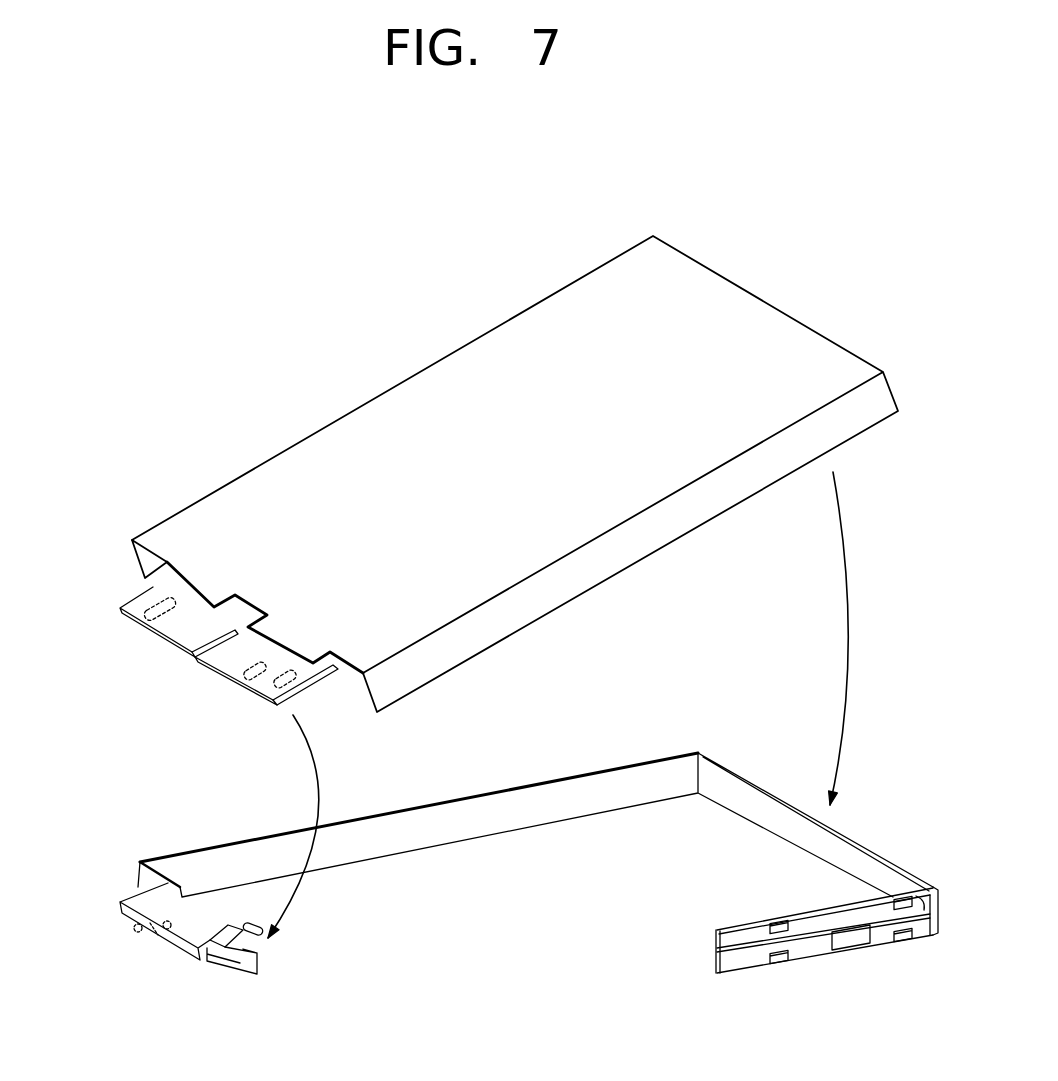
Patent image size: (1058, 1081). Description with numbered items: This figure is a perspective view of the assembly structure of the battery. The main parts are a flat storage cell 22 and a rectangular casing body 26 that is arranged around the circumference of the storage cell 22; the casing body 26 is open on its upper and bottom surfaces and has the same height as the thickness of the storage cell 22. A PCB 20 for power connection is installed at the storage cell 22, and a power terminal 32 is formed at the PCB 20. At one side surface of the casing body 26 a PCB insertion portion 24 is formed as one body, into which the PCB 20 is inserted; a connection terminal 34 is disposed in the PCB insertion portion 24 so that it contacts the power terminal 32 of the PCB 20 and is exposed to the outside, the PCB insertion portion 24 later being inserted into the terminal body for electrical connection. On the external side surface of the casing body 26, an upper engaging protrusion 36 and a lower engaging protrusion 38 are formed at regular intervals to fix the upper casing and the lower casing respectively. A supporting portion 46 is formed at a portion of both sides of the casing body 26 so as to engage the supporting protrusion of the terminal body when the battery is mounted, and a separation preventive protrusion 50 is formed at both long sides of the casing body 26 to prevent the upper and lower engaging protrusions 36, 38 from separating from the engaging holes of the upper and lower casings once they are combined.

The PCB 20 is at (215, 660).
The storage cell 22 is at (745, 323).
The PCB insertion portion 24 is at (168, 955).
The casing body 26 is at (538, 870).
The power terminal 32 is at (160, 618).
The connection terminal 34 is at (135, 933).
The upper engaging protrusion 36 is at (920, 897).
The lower engaging protrusion 38 is at (912, 935).
The supporting portion 46 is at (847, 942).
The separation preventive protrusion 50 is at (785, 965).